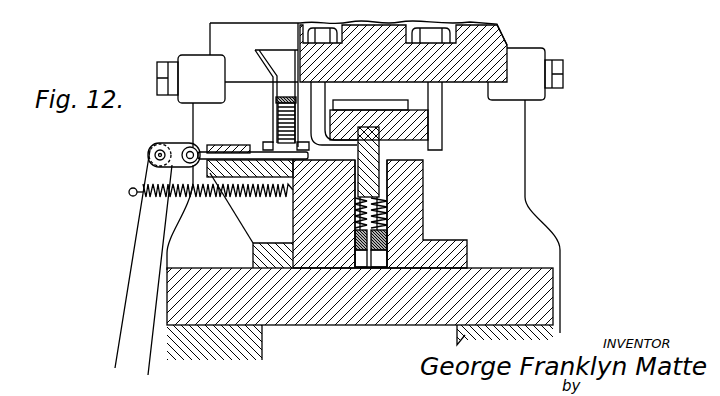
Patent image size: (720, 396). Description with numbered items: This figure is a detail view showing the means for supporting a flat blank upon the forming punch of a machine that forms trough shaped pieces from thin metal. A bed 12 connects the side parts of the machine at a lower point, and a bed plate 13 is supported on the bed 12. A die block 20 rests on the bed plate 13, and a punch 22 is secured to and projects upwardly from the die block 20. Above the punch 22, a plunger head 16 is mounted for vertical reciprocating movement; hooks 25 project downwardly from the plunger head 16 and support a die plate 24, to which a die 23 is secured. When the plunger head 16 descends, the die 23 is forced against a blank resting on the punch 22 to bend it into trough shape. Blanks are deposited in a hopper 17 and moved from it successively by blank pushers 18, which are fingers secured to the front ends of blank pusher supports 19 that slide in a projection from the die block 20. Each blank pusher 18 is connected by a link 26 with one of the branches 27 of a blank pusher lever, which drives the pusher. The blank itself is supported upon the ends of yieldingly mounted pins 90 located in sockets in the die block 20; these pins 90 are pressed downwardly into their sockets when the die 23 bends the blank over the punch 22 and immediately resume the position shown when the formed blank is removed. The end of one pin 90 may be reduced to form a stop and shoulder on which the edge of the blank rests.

The bed 12 is at (276, 101).
The bed plate 13 is at (545, 287).
The plunger head 16 is at (497, 50).
The hopper 17 is at (268, 68).
The blank pusher 18 is at (243, 157).
The blank pusher support 19 is at (210, 150).
The die block 20 is at (415, 207).
The punch 22 is at (375, 162).
The die 23 is at (383, 107).
The die plate 24 is at (430, 118).
The hook 25 is at (443, 140).
The link 26 is at (180, 145).
The branch of blank pusher lever 27 is at (138, 254).
The yieldingly mounted pin 90 is at (377, 180).